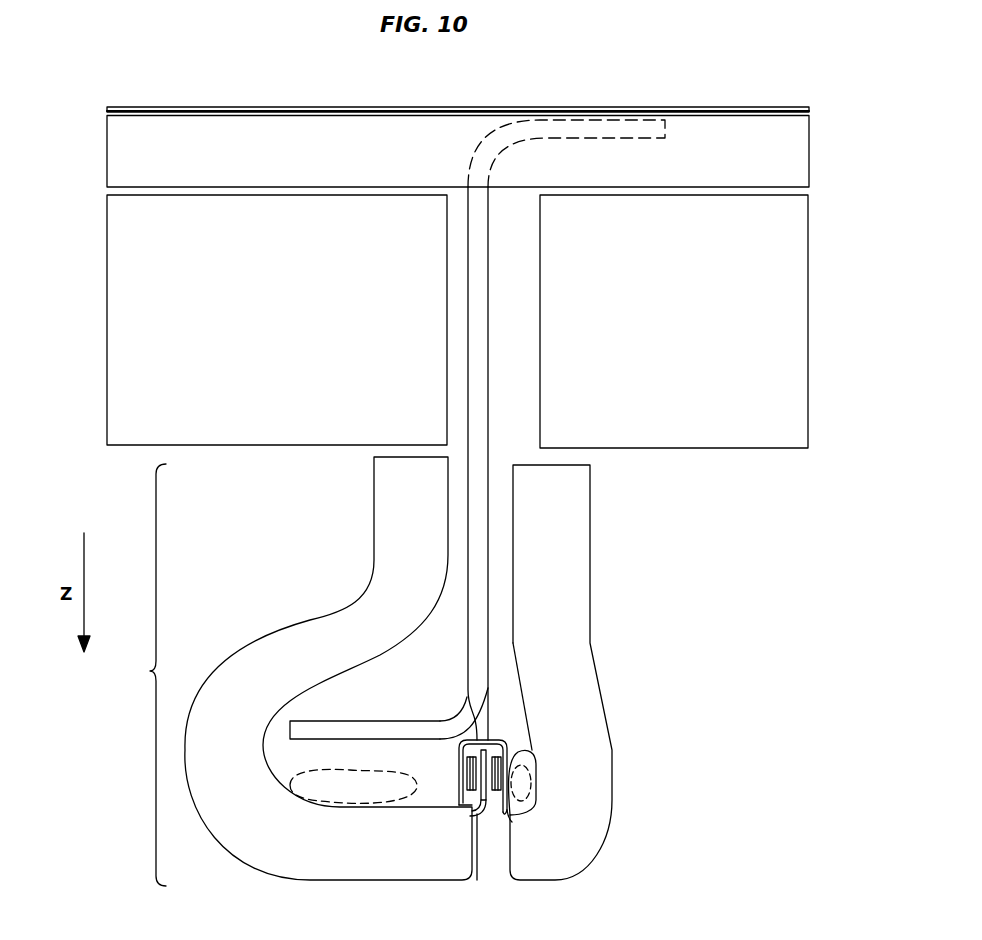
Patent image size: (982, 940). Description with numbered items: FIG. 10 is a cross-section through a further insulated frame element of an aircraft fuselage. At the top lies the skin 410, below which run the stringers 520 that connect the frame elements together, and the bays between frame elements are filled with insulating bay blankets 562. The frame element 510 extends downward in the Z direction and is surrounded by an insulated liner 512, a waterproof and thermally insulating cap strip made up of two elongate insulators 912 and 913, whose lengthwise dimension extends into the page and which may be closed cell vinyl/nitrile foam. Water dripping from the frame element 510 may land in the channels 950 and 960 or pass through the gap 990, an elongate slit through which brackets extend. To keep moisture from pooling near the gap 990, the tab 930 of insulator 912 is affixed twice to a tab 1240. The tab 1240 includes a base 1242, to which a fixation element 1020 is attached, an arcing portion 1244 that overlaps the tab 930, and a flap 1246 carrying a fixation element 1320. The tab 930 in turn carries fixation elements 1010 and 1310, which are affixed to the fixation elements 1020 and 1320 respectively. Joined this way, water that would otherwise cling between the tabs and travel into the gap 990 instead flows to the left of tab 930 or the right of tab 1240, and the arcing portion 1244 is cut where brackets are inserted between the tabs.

The skin 410 is at (150, 106).
The stringer 520 is at (107, 164).
The insulating bay blanket 562 is at (107, 424).
The frame element 510 is at (482, 327).
The insulator 912 is at (328, 668).
The insulator 913 is at (570, 510).
The insulated liner 512 is at (141, 675).
The arcing portion 1244 is at (471, 713).
The tab 1240 is at (506, 716).
The fixation element 1010 is at (498, 744).
The fixation element 1020 is at (501, 760).
The channel 960 is at (532, 785).
The flap 1246 is at (462, 757).
The fixation element 1320 is at (470, 775).
The fixation element 1310 is at (470, 808).
The base 1242 is at (507, 814).
The tab 930 is at (479, 820).
The gap 990 is at (508, 886).
The channel 950 is at (328, 798).